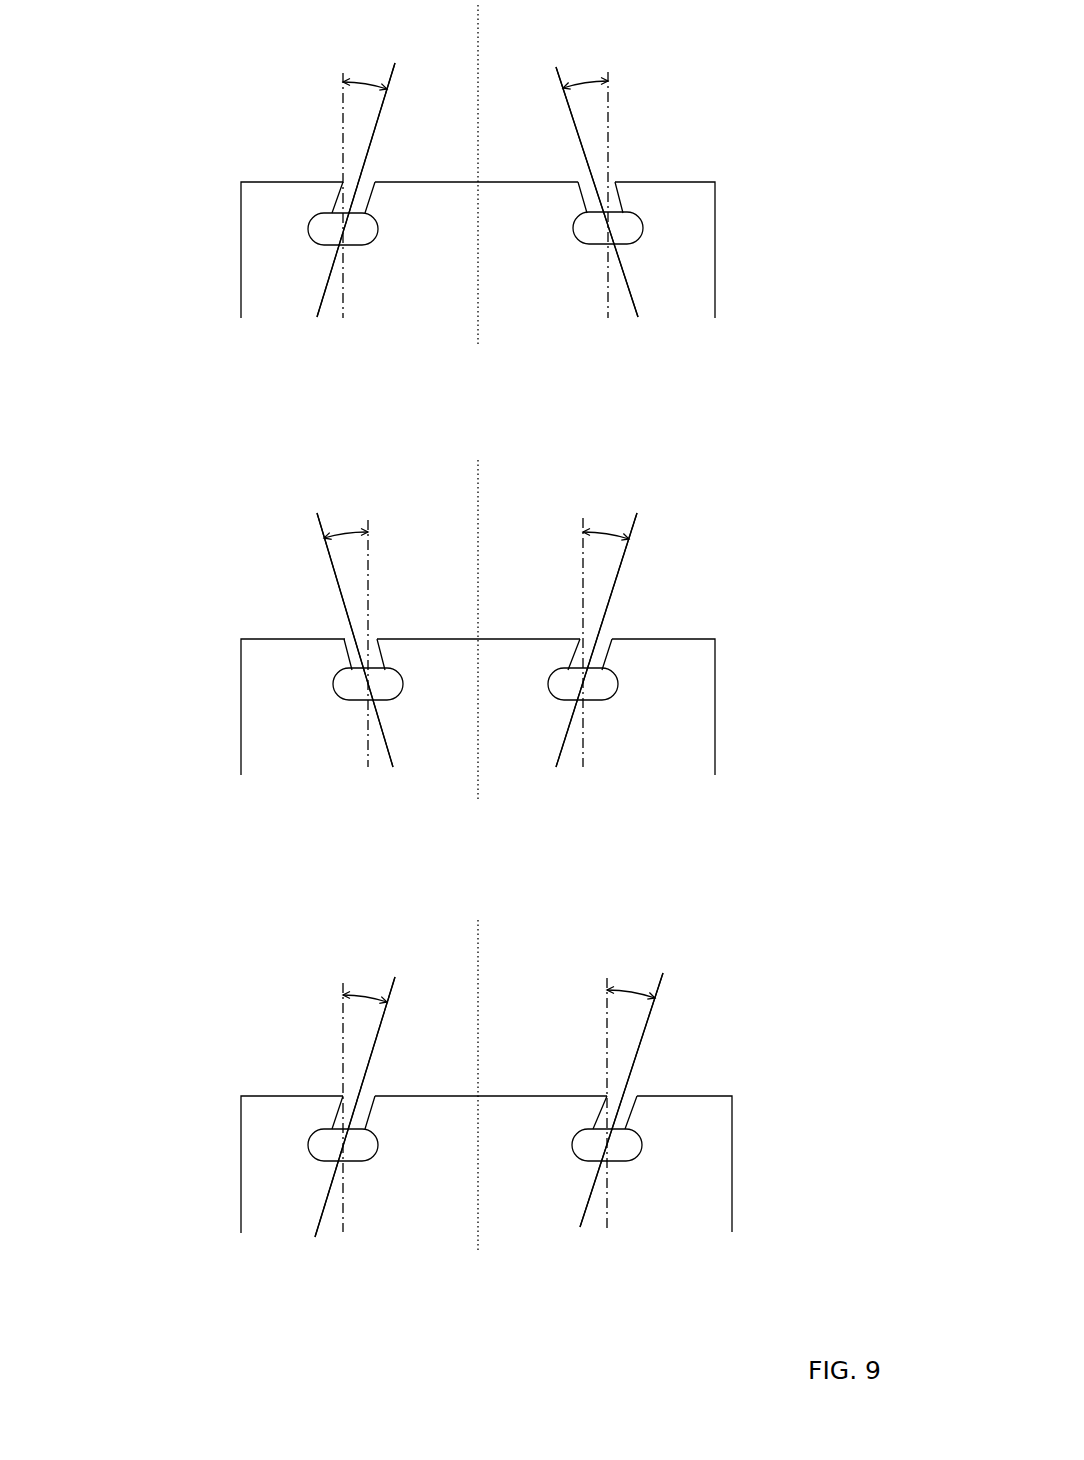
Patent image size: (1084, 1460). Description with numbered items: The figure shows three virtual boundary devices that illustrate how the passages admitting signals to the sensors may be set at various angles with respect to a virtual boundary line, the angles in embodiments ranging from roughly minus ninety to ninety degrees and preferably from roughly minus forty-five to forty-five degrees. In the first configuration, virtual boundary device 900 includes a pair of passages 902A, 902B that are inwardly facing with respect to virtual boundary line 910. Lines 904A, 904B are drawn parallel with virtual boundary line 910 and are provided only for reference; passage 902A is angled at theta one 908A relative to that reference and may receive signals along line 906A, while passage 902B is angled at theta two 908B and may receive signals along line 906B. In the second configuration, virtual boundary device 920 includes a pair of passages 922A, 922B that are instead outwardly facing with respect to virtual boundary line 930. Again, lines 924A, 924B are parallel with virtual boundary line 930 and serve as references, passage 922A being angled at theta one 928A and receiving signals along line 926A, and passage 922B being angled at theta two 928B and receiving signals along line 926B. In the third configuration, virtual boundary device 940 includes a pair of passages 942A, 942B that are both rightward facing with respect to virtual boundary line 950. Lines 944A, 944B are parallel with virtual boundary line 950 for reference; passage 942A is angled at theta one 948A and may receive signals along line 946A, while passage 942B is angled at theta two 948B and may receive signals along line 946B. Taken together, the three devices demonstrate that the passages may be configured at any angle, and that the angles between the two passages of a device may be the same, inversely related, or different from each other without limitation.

The virtual boundary device 900 is at (101, 62).
The passage 902A is at (373, 202).
The passage 902B is at (583, 203).
The line 904A is at (343, 117).
The line 904B is at (608, 117).
The line 906A is at (317, 317).
The line 906B is at (638, 317).
The angle theta one 908A is at (355, 58).
The angle theta two 908B is at (603, 58).
The virtual boundary line 910 is at (478, 17).
The virtual boundary device 920 is at (101, 475).
The passage 922A is at (347, 648).
The passage 922B is at (610, 650).
The line 924A is at (366, 766).
The line 924B is at (583, 758).
The line 926A is at (332, 570).
The line 926B is at (620, 577).
The angle theta one 928A is at (327, 512).
The angle theta two 928B is at (637, 512).
The virtual boundary line 930 is at (478, 483).
The virtual boundary device 940 is at (101, 973).
The passage 942A is at (373, 1105).
The passage 942B is at (633, 1112).
The line 944A is at (343, 1030).
The line 944B is at (607, 1232).
The line 946A is at (315, 1237).
The line 946B is at (643, 1032).
The angle theta one 948A is at (355, 970).
The angle theta two 948B is at (652, 970).
The virtual boundary line 950 is at (478, 930).